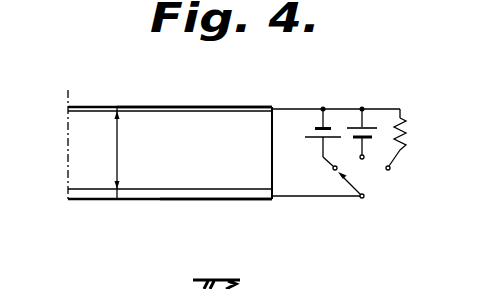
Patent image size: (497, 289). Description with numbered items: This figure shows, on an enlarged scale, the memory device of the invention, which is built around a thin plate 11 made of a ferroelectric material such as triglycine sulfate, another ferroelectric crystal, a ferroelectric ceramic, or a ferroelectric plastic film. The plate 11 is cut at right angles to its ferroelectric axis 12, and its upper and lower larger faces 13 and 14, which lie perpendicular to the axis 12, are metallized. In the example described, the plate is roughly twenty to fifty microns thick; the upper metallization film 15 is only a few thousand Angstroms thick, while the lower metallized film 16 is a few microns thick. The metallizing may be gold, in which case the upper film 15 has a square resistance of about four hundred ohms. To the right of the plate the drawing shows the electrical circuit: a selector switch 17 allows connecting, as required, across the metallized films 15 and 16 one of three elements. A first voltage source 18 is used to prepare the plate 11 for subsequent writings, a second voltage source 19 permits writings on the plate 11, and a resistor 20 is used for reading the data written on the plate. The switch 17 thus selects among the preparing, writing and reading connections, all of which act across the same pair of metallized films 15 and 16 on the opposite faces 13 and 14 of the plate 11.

The thin plate 11 is at (160, 168).
The ferroelectric axis 12 is at (99, 153).
The upper face 13 is at (198, 110).
The lower face 14 is at (244, 192).
The upper metallization film 15 is at (142, 108).
The lower metallized film 16 is at (204, 192).
The selector switch 17 is at (370, 187).
The first voltage source 18 is at (313, 132).
The second voltage source 19 is at (357, 123).
The resistor 20 is at (413, 139).